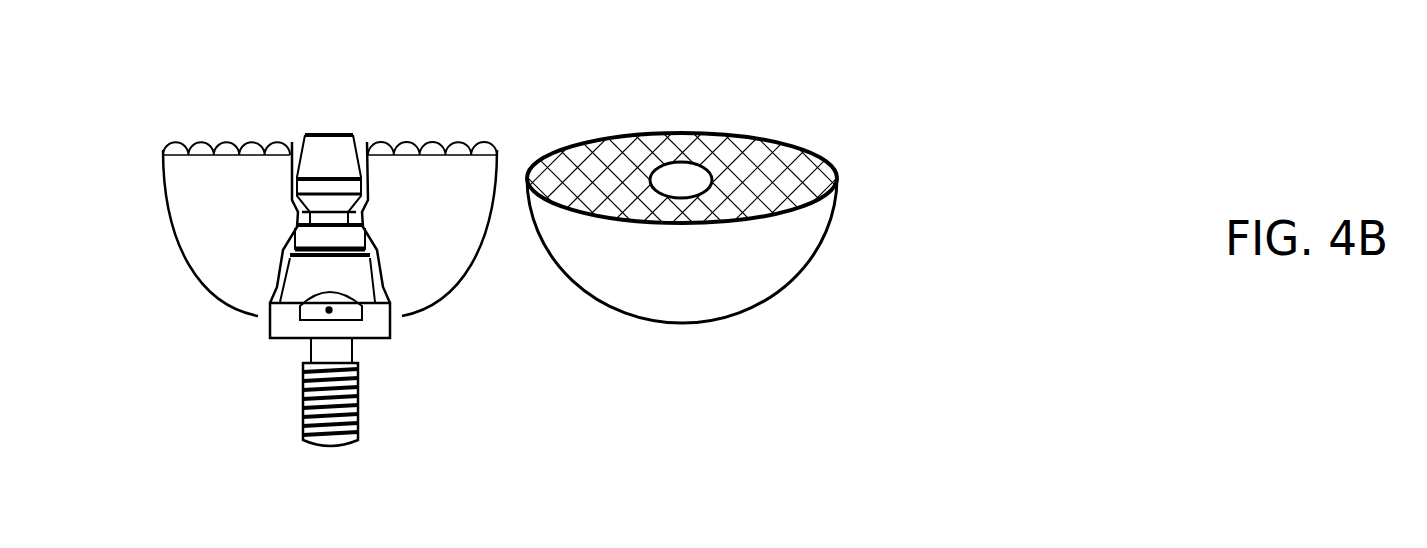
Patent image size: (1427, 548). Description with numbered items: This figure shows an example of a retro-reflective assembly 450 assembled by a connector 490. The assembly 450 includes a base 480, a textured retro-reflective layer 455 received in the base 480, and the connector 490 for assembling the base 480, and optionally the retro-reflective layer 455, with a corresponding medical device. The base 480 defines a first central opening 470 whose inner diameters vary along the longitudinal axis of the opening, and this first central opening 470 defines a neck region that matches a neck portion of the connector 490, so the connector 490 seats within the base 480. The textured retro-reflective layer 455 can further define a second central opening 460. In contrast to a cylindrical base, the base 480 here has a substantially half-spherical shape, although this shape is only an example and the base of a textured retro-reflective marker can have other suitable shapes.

The retro-reflective assembly 450 is at (1000, 122).
The textured retro-reflective layer 455 is at (620, 165).
The second central opening 460 is at (690, 173).
The first central opening 470 is at (282, 217).
The base 480 is at (745, 248).
The connector 490 is at (388, 337).